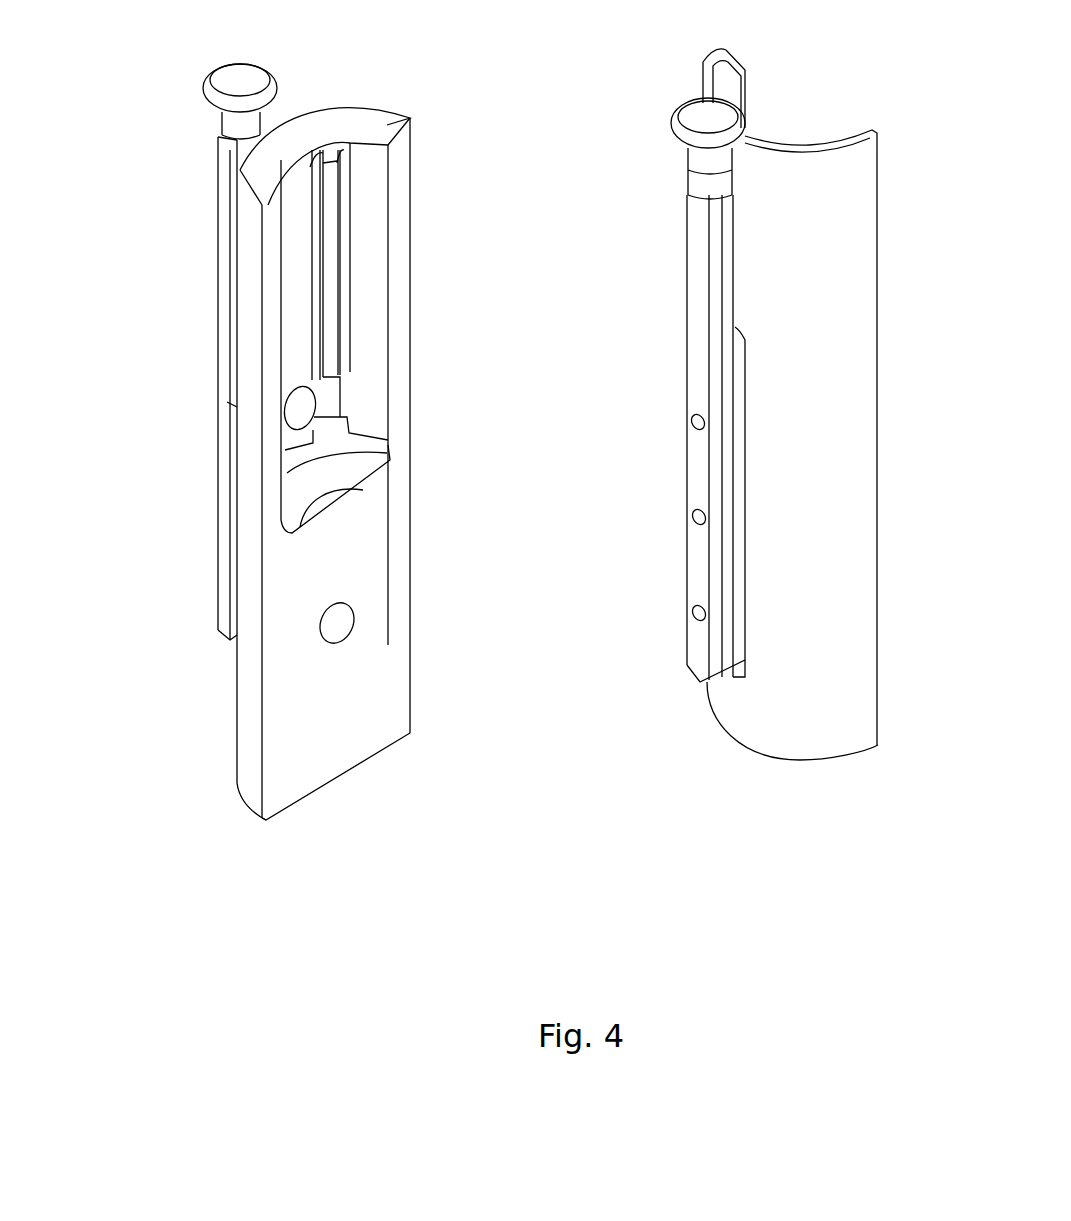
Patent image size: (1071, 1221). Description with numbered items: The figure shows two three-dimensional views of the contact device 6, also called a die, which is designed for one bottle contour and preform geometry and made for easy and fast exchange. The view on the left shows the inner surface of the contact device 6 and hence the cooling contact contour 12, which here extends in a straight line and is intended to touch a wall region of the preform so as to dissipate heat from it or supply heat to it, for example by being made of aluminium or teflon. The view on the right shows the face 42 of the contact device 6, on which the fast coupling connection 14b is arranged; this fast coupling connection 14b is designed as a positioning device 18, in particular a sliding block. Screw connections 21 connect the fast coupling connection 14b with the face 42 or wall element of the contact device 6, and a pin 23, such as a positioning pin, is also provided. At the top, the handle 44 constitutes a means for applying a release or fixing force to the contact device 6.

The handle 44 is at (278, 77).
The cooling contact contour 12 is at (330, 357).
The fast coupling connection 14b is at (220, 360).
The positioning device 18 is at (232, 635).
The screw connections 21 is at (690, 420).
The pin 23 is at (690, 515).
The face 42 is at (258, 745).
The contact device 6 is at (360, 710).